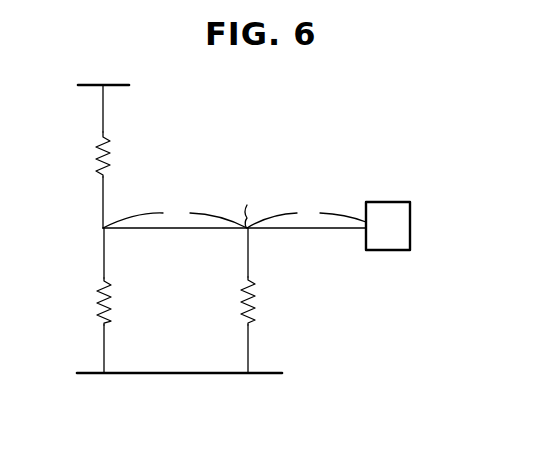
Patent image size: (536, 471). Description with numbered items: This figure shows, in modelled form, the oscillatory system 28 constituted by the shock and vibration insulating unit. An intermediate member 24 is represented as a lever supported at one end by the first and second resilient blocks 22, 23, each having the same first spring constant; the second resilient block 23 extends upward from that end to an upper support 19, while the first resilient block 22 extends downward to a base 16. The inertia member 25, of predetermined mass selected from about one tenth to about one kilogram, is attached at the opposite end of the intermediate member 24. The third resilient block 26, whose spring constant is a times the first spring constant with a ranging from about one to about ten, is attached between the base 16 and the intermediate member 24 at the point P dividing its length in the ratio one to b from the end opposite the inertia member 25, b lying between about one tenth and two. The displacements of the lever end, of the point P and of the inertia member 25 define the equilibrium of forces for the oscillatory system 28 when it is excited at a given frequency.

The base / fixed support 16 is at (182, 375).
The upper fixed support 19 is at (115, 87).
The first resilient block 22 is at (96, 303).
The second resilient block 23 is at (97, 160).
The intermediate member 24 is at (184, 230).
The inertia member 25 is at (389, 251).
The third resilient block 26 is at (243, 296).
The oscillatory system 28 is at (259, 169).